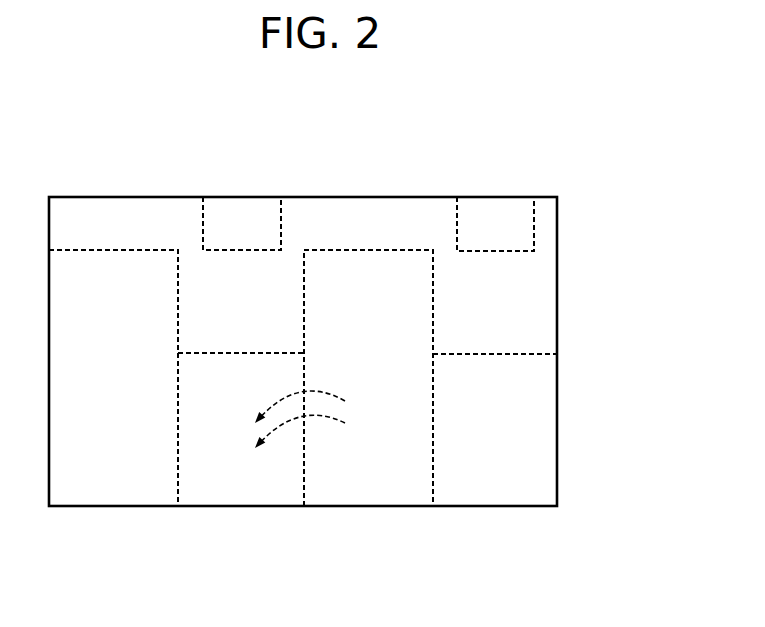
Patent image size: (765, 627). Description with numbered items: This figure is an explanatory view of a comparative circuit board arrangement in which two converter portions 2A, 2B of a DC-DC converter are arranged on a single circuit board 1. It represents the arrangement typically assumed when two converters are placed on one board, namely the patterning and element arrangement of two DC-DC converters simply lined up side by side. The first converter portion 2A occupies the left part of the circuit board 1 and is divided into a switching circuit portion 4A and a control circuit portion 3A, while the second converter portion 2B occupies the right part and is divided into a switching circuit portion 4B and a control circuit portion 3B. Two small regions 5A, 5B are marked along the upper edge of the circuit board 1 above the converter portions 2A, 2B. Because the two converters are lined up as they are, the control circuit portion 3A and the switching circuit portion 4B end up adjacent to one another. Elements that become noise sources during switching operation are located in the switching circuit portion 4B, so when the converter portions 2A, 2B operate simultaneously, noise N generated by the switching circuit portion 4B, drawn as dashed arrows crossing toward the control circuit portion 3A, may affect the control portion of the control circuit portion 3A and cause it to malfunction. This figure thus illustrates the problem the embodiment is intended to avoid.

The circuit board 1 is at (557, 218).
The converter portion 2A is at (176, 423).
The converter portion 2B is at (430, 423).
The control circuit portion 3A is at (217, 490).
The control circuit portion 3B is at (477, 495).
The switching circuit portion 4A is at (140, 490).
The switching circuit portion 4B is at (375, 493).
The recess 5A is at (238, 210).
The recess 5B is at (492, 210).
The noise N is at (300, 408).